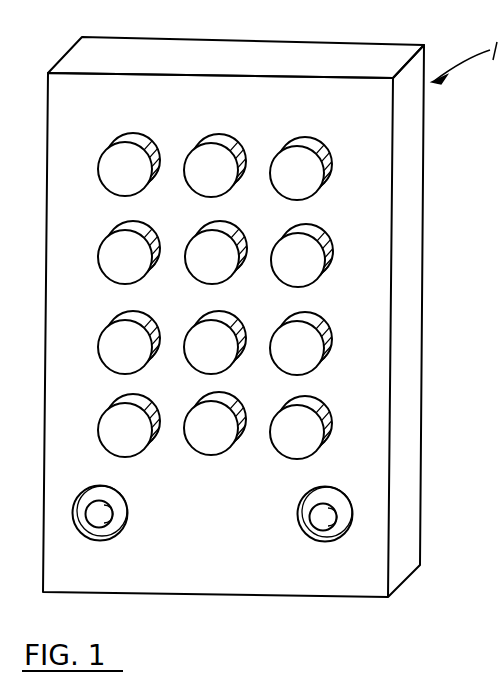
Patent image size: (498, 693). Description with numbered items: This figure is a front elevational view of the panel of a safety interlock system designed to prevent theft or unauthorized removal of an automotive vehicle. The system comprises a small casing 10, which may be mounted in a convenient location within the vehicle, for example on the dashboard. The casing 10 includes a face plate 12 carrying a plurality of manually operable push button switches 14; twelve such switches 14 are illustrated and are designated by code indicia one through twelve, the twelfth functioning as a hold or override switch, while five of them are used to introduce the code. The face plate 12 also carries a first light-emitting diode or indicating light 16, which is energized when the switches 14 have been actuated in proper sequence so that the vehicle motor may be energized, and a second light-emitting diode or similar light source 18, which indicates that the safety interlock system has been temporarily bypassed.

The casing 10 is at (406, 221).
The face plate 12 is at (278, 318).
The push button switches 14 is at (207, 448).
The light-emitting diode 16 is at (110, 516).
The light source 18 is at (320, 527).